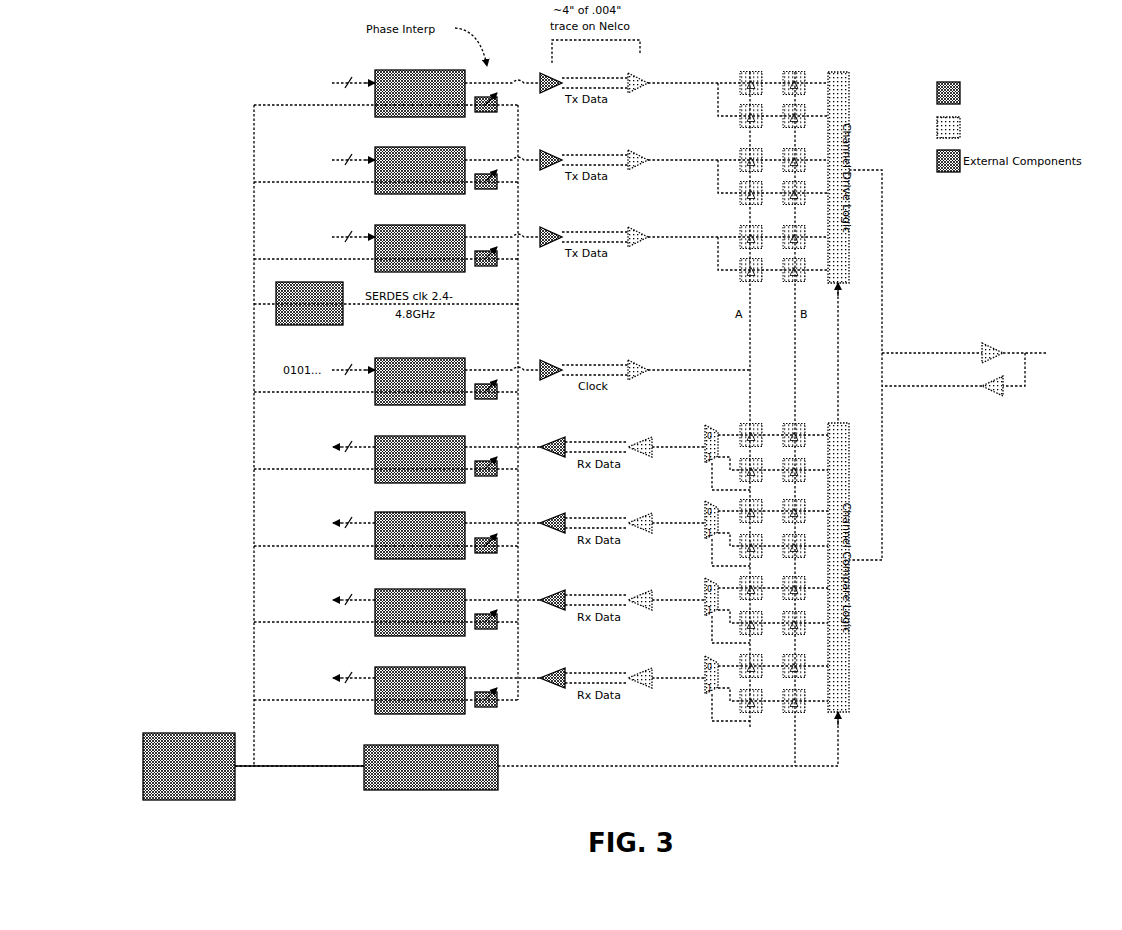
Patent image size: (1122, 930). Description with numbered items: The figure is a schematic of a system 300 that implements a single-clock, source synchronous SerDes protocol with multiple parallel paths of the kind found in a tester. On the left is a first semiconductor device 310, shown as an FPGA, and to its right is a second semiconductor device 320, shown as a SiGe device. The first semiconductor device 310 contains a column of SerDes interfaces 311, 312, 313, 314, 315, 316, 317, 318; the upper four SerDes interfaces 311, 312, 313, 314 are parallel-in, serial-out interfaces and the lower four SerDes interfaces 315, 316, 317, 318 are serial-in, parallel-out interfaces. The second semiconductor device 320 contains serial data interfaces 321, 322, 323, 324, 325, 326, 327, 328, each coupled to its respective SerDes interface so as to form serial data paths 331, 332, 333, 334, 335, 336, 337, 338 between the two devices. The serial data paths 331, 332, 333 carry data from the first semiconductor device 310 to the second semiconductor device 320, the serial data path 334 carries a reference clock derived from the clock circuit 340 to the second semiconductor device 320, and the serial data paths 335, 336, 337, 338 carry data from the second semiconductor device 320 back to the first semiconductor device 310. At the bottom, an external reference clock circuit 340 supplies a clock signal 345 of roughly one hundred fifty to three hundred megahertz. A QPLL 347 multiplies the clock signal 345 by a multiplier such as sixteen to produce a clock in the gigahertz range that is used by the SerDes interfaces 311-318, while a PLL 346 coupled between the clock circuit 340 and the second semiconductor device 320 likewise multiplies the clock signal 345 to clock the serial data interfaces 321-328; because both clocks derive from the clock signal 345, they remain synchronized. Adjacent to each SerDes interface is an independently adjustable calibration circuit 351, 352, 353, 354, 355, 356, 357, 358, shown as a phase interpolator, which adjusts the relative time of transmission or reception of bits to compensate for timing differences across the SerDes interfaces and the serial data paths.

The system 300 is at (136, 158).
The first semiconductor device 310 is at (937, 85).
The second semiconductor device 320 is at (937, 133).
The SerDes interface 311 is at (375, 82).
The SerDes interface 312 is at (375, 159).
The SerDes interface 313 is at (375, 236).
The SerDes interface 314 is at (375, 369).
The SerDes interface 315 is at (375, 446).
The SerDes interface 316 is at (375, 522).
The SerDes interface 317 is at (375, 599).
The SerDes interface 318 is at (375, 677).
The serial data interface 321 is at (648, 80).
The serial data interface 322 is at (648, 157).
The serial data interface 323 is at (652, 238).
The serial data interface 324 is at (649, 364).
The serial data interface 325 is at (652, 441).
The serial data interface 326 is at (649, 517).
The serial data interface 327 is at (651, 597).
The serial data interface 328 is at (651, 672).
The serial data path 331 is at (592, 79).
The serial data path 332 is at (562, 156).
The serial data path 333 is at (562, 234).
The serial data path 334 is at (562, 364).
The serial data path 335 is at (563, 441).
The serial data path 336 is at (563, 518).
The serial data path 337 is at (563, 594).
The serial data path 338 is at (563, 671).
The clock circuit 340 is at (175, 733).
The clock signal 345 is at (249, 767).
The PLL 346 is at (420, 790).
The QPLL 347 is at (276, 286).
The calibration circuit 351 is at (478, 112).
The calibration circuit 352 is at (478, 189).
The calibration circuit 353 is at (495, 261).
The calibration circuit 354 is at (478, 399).
The calibration circuit 355 is at (478, 477).
The calibration circuit 356 is at (478, 551).
The calibration circuit 357 is at (478, 629).
The calibration circuit 358 is at (478, 709).